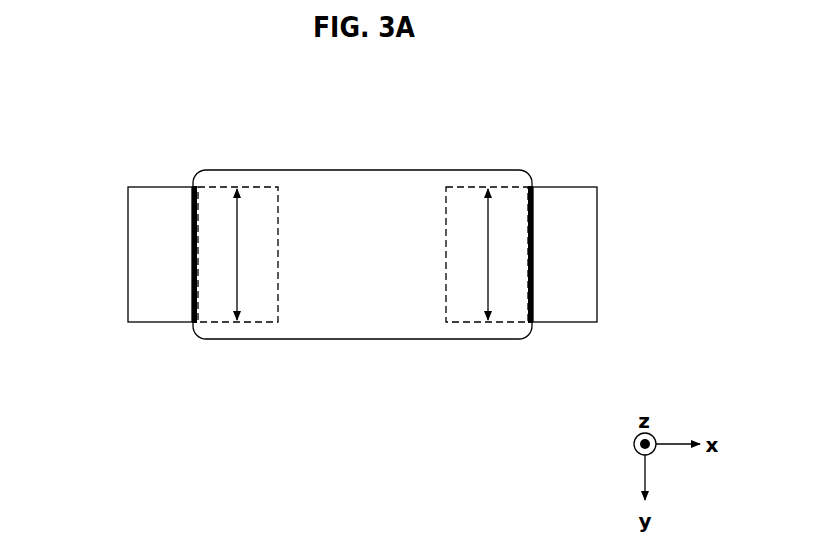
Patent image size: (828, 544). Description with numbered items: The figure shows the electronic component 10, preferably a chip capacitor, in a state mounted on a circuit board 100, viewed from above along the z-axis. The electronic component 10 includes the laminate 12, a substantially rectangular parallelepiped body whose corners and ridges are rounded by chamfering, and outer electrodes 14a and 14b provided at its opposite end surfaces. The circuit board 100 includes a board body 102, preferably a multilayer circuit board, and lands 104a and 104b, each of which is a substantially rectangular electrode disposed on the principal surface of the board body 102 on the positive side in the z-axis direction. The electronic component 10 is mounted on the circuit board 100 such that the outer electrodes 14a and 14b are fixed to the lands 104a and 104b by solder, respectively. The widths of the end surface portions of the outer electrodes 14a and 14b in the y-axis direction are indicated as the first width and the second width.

The circuit board 100 is at (192, 105).
The electronic component 10 is at (376, 167).
The laminate 12 is at (320, 170).
The outer electrode 14a is at (255, 190).
The outer electrode 14b is at (497, 197).
The board body 102 is at (103, 172).
The land 104a is at (148, 315).
The land 104b is at (540, 195).